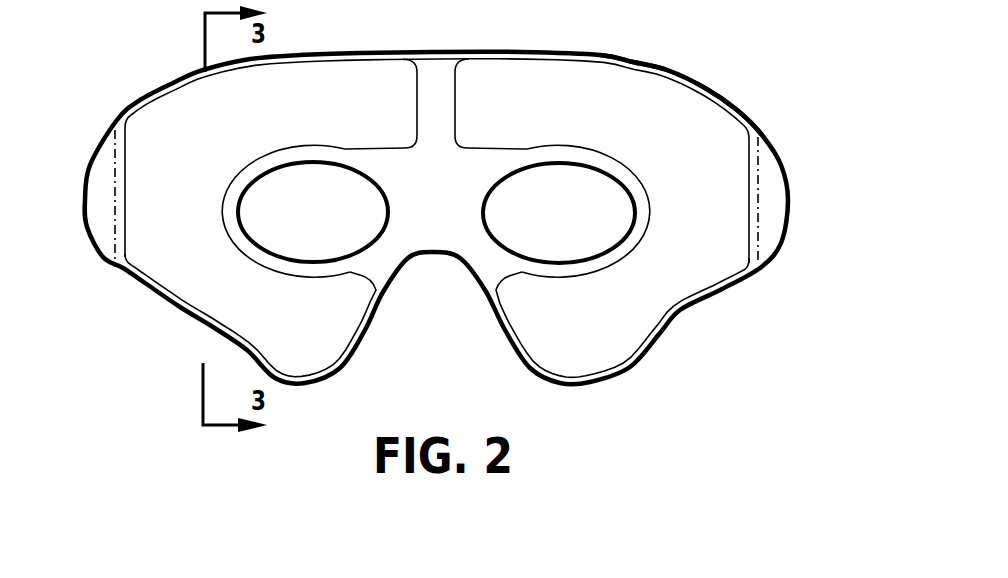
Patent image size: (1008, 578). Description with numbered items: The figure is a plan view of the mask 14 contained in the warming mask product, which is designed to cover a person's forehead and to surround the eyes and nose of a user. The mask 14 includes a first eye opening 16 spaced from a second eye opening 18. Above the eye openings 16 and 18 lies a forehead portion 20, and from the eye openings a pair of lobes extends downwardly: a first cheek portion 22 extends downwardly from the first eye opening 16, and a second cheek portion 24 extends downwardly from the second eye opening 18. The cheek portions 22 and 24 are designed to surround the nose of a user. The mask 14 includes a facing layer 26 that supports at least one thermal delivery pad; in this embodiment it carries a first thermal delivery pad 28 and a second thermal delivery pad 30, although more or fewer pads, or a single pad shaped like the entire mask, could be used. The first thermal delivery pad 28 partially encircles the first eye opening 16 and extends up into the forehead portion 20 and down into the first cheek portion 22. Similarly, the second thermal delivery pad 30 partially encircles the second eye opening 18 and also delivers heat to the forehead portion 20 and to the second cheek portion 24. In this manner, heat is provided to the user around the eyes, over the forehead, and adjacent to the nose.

The mask 14 is at (633, 82).
The first eye opening 16 is at (362, 215).
The second eye opening 18 is at (597, 231).
The forehead portion 20 is at (498, 82).
The first cheek portion 22 is at (281, 355).
The second cheek portion 24 is at (592, 358).
The facing layer 26 is at (667, 73).
The first thermal delivery pad 28 is at (147, 226).
The second thermal delivery pad 30 is at (732, 177).